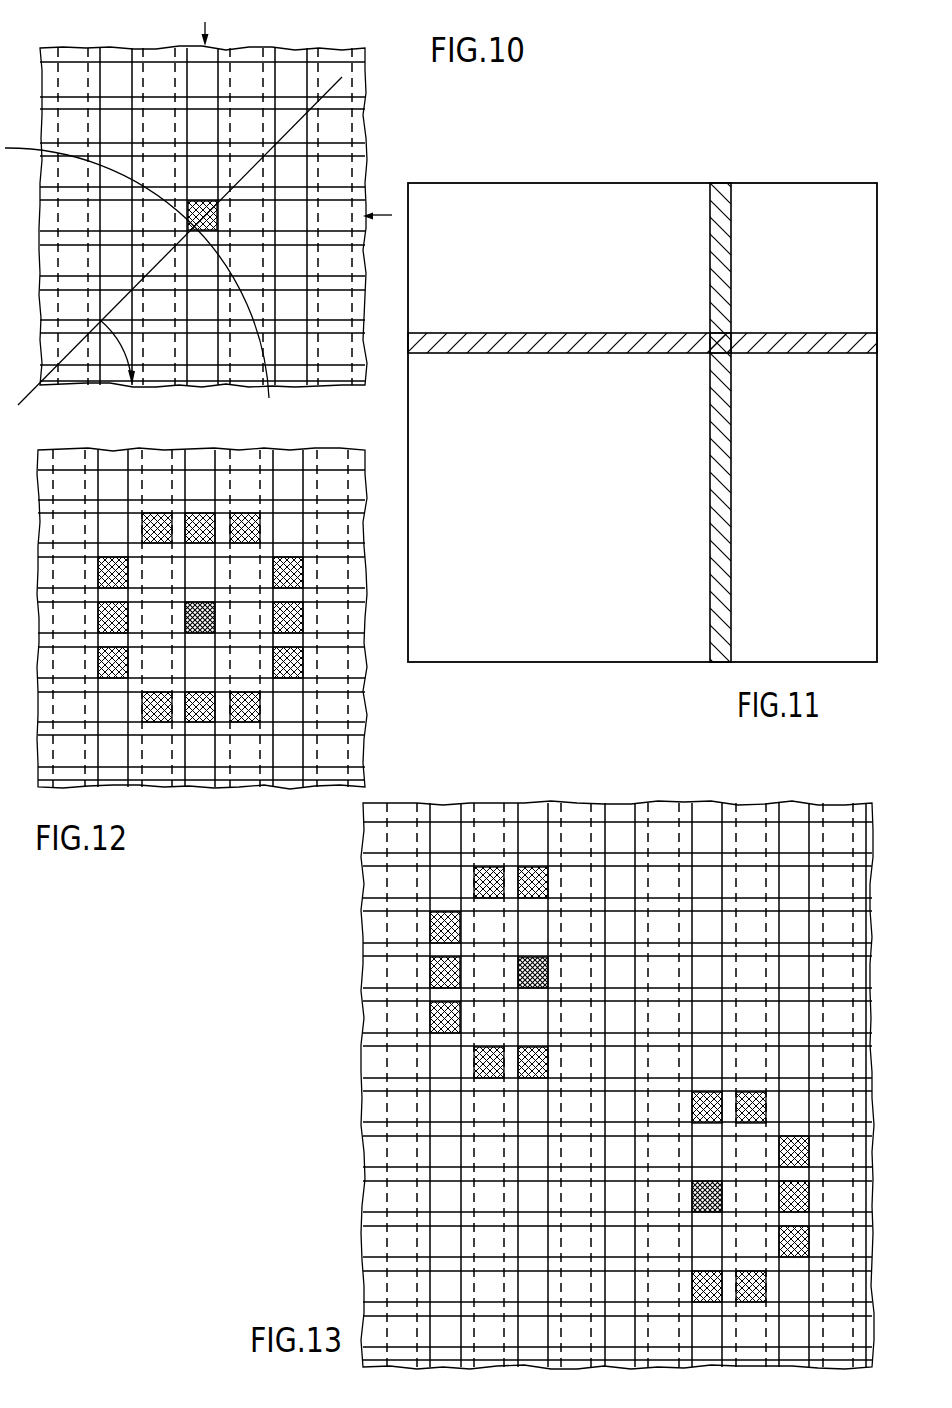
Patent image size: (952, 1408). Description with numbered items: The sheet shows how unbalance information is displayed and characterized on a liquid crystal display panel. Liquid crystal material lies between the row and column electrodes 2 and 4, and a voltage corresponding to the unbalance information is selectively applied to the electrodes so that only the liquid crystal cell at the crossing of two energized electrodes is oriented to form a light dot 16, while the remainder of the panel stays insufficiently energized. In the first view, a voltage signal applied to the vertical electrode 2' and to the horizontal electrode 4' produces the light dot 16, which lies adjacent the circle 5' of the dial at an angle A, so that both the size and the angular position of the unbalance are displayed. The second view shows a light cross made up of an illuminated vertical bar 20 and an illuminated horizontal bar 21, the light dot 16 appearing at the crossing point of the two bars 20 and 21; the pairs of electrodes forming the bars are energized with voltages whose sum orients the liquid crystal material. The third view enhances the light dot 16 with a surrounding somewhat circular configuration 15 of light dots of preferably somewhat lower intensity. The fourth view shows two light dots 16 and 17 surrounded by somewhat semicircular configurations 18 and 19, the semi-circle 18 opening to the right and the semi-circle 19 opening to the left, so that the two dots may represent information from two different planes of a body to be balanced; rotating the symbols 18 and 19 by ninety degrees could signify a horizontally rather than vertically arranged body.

In FIG. 10, the electrode 2 is at (211, 235).
In FIG. 10, the vertical electrode 2' is at (226, 34).
In FIG. 10, the electrode 4 is at (216, 206).
In FIG. 10, the horizontal electrode 4' is at (378, 203).
In FIG. 10, the circle 5' is at (157, 284).
In FIG. 10, the angle A is at (118, 356).
In FIG. 12, the circular configuration 15 is at (160, 515).
In FIG. 10, the light dot 16 is at (218, 212).
In FIG. 11, the light dot 16 is at (731, 331).
In FIG. 12, the light dot 16 is at (182, 602).
In FIG. 13, the light dot 16 is at (535, 957).
In FIG. 13, the light dot 17 is at (712, 1183).
In FIG. 13, the semicircular configuration 18 is at (490, 868).
In FIG. 13, the semicircular configuration 19 is at (808, 1245).
In FIG. 11, the vertical bar 20 is at (708, 623).
In FIG. 11, the horizontal bar 21 is at (450, 337).